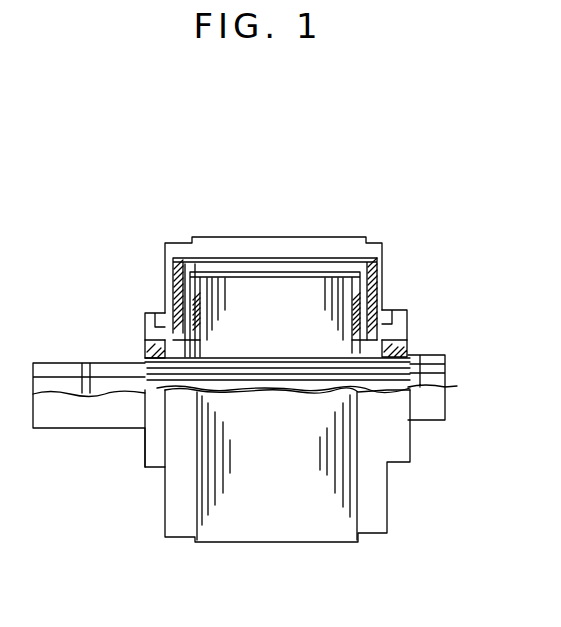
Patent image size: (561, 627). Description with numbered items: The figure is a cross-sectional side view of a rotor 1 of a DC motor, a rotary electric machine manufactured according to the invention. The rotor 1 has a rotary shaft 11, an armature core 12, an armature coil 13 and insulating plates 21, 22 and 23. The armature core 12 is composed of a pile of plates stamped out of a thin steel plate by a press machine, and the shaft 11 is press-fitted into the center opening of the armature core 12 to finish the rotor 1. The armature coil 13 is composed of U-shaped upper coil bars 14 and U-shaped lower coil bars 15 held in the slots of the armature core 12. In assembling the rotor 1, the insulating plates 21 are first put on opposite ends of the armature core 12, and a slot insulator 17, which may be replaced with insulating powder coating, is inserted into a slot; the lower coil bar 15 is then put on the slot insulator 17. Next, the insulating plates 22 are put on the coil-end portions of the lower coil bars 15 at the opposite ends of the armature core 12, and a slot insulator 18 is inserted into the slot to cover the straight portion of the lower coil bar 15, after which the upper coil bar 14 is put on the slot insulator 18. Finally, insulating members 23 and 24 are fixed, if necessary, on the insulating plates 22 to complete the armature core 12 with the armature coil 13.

The rotor 1 is at (481, 228).
The rotary shaft 11 is at (108, 413).
The armature core 12 is at (265, 527).
The armature coil 13 is at (157, 154).
The upper coil bar 14 is at (180, 253).
The lower coil bar 15 is at (216, 258).
The slot insulator 17 is at (332, 278).
The slot insulator 18 is at (265, 263).
The insulating plate 21 is at (178, 263).
The insulating plate 22 is at (192, 276).
The insulating member 23 is at (157, 323).
The insulating member 24 is at (150, 351).